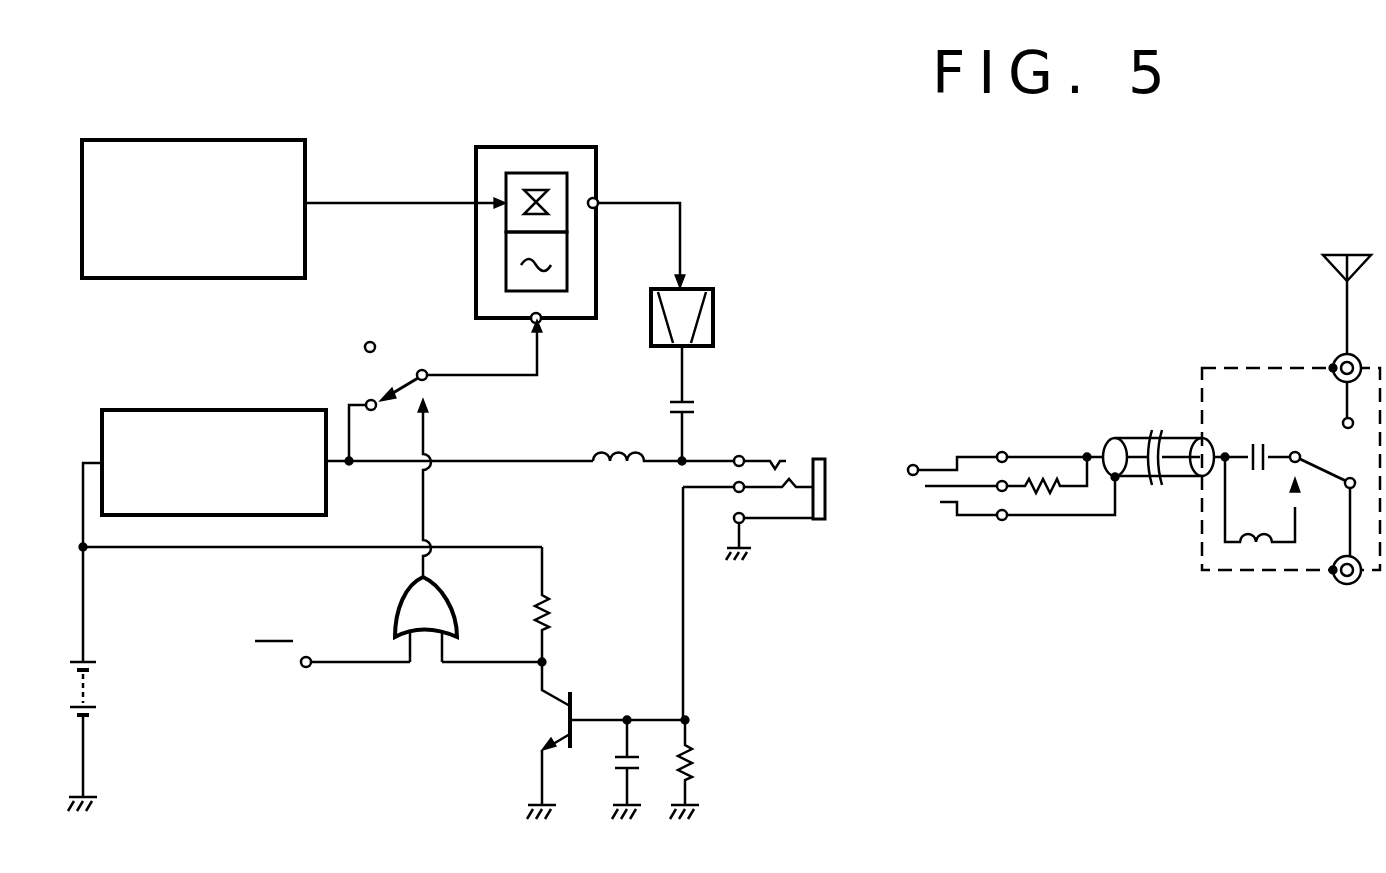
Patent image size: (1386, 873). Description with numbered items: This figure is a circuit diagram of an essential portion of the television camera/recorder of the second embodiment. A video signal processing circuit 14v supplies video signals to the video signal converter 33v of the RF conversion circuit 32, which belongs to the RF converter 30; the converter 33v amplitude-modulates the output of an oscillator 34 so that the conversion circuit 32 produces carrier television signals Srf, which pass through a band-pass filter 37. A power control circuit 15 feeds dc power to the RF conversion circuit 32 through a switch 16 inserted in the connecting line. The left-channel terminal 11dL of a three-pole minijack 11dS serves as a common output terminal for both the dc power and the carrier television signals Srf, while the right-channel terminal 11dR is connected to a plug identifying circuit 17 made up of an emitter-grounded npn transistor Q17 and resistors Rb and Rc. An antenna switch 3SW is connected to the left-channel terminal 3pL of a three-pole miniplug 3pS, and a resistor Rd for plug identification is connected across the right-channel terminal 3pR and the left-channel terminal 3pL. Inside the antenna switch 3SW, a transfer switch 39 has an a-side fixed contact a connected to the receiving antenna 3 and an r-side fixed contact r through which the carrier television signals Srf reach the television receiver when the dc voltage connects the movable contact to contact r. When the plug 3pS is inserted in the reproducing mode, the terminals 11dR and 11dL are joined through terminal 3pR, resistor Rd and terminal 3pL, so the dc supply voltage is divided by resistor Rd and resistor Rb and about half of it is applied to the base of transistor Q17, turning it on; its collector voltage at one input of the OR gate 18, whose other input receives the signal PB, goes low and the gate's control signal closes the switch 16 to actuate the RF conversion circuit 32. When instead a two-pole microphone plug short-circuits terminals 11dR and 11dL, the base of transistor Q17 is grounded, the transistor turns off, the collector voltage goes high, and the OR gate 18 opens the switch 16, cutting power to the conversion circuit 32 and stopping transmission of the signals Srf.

The video signal processing circuit 14v is at (197, 278).
The power control circuit 15 is at (326, 497).
The switch 16 is at (354, 379).
The plug identifying circuit 17 is at (640, 628).
The OR gate 18 is at (395, 610).
The RF converter 30 is at (683, 173).
The RF conversion circuit 32 is at (568, 320).
The video signal converter 33v is at (506, 186).
The oscillator 34 is at (506, 262).
The band-pass filter 37 is at (713, 310).
The carrier television signals Srf is at (642, 206).
The left-channel terminal 11dL is at (740, 456).
The right-channel terminal 11dR is at (735, 492).
The 3-pole minijack 11dS is at (820, 532).
The playback (reproducing mode) signal PB is at (332, 660).
The resistor Rc is at (538, 610).
The resistor Rb is at (692, 760).
The npn transistor Q17 is at (560, 714).
The receiving antenna 3 is at (1330, 268).
The 3-pole miniplug 3pS is at (951, 444).
The left-channel terminal 3pL is at (1005, 452).
The right-channel terminal 3pR is at (1006, 492).
The resistor for plug identification Rd is at (1053, 492).
The antenna switch 3SW is at (1276, 572).
The transfer switch 39 is at (1330, 464).
The a-side fixed contact a is at (1357, 405).
The r-side fixed contact r is at (1360, 516).